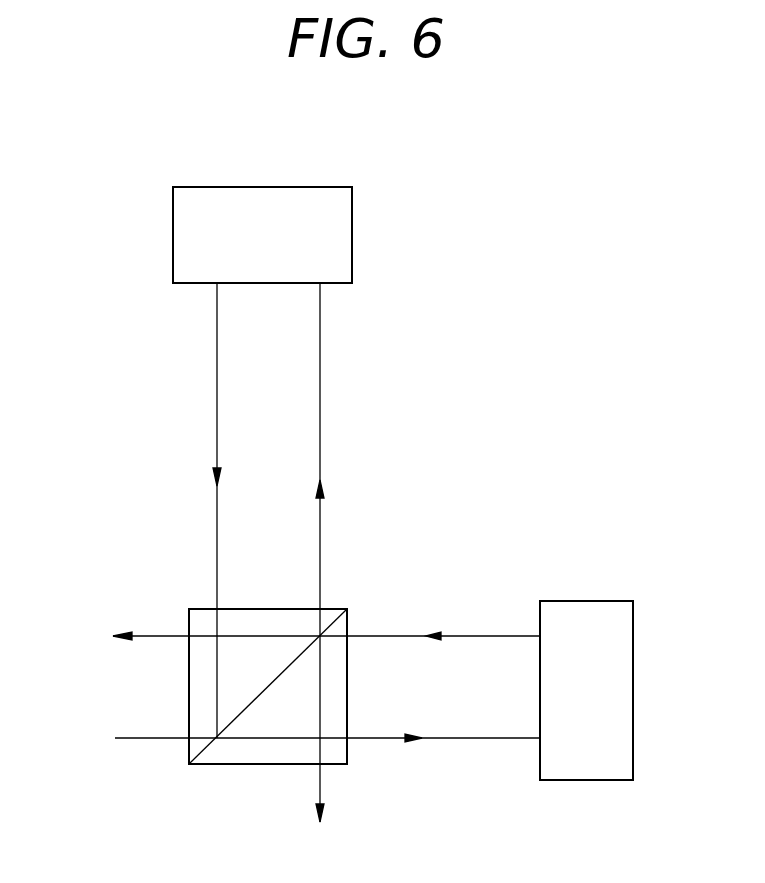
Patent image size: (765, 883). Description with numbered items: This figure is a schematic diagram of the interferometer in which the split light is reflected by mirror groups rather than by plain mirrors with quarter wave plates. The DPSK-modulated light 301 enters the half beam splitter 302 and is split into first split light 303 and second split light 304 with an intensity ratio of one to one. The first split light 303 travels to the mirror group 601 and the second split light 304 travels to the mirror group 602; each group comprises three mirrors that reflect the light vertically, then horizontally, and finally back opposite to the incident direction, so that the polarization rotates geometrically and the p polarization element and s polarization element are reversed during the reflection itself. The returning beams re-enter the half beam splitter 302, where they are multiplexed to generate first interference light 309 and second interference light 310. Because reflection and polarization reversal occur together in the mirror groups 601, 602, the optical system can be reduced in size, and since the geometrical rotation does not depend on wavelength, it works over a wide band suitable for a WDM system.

The mirror group 601 is at (183, 239).
The mirror group 602 is at (589, 608).
The first split light 303 is at (217, 437).
The second interference light 310 is at (318, 790).
The half beam splitter 302 is at (217, 757).
The first interference light 309 is at (157, 634).
The DPSK-modulated light 301 is at (151, 738).
The second split light 304 is at (375, 742).